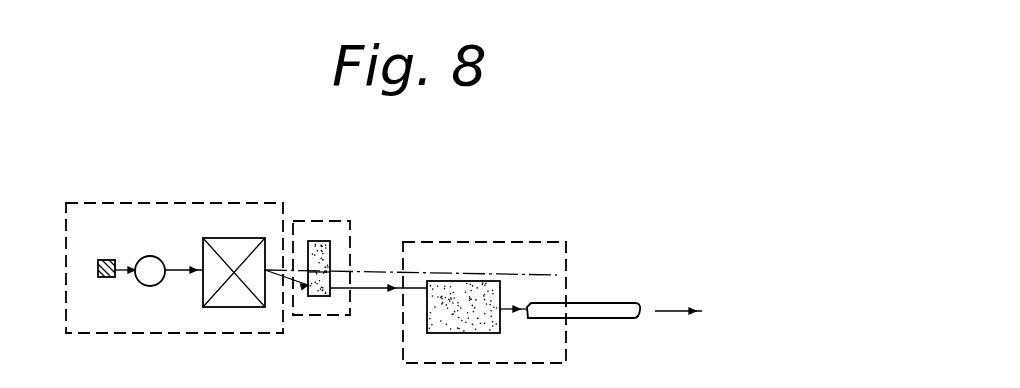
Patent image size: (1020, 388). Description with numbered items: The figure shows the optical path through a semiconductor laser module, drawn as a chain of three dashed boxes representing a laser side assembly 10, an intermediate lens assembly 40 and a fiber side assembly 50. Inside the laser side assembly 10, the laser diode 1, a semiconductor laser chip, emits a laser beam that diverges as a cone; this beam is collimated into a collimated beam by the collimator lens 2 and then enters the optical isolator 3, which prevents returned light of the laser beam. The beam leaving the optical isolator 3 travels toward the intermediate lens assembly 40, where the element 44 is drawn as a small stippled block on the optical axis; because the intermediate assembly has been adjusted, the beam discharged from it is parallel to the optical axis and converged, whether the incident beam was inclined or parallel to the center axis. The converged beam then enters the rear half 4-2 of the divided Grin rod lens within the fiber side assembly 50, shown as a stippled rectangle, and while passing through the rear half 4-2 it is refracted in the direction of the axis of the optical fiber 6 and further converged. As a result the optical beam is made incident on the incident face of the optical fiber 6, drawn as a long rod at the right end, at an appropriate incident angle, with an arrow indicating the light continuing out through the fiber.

The laser side assembly 10 is at (206, 142).
The intermediate lens assembly 40 is at (345, 142).
The fiber side assembly 50 is at (506, 142).
The laser diode 1 is at (107, 260).
The collimator lens 2 is at (146, 257).
The optical isolator 3 is at (233, 246).
The optical element 44 is at (320, 243).
The rear half of the divided Grin rod lens 4-2 is at (470, 290).
The optical fiber 6 is at (610, 310).